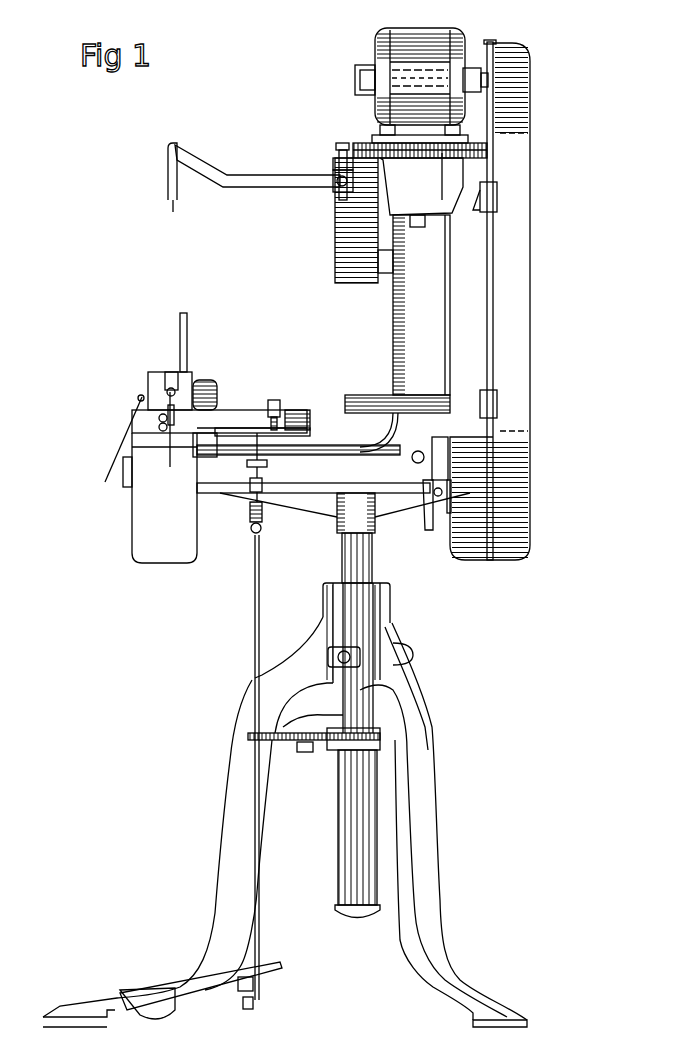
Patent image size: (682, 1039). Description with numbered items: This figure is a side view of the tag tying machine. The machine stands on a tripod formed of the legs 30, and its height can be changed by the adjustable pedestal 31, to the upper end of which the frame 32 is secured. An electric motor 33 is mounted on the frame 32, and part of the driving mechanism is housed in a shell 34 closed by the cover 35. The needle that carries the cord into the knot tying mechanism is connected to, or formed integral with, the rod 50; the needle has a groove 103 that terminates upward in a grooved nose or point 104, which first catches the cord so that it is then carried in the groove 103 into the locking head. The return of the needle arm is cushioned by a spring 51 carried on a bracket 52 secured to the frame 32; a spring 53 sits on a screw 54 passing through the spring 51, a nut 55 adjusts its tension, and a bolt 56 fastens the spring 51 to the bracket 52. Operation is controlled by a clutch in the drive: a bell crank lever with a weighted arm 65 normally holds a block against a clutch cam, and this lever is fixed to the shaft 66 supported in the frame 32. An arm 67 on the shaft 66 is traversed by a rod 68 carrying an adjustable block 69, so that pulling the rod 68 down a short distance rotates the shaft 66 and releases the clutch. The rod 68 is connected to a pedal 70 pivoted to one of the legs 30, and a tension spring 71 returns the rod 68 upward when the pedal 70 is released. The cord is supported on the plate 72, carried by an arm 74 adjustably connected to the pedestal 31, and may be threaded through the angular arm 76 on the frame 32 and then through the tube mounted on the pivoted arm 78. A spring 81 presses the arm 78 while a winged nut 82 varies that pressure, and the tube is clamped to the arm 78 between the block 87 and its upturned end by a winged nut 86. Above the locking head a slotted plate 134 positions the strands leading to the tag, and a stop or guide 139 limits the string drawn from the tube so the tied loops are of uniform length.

The legs 30 is at (235, 810).
The adjustable pedestal 31 is at (362, 572).
The frame 32 is at (405, 352).
The electric motor 33 is at (398, 58).
The shell 34 is at (458, 310).
The cover 35 is at (522, 315).
The rod 50 is at (256, 177).
The spring 51 is at (330, 185).
The bracket 52 is at (352, 240).
The spring 53 is at (337, 162).
The screw 54 is at (345, 147).
The nut 55 is at (338, 148).
The bolt 56 is at (335, 195).
The weighted arm 65 is at (428, 525).
The shaft 66 is at (357, 486).
The arm 67 is at (262, 484).
The rod 68 is at (254, 612).
The adjustable block 69 is at (248, 464).
The pedal 70 is at (265, 980).
The spring 71 is at (250, 512).
The plate 72 is at (290, 742).
The arm 74 is at (340, 752).
The angular arm 76 is at (298, 411).
The arm 78 is at (233, 430).
The spring 81 is at (310, 418).
The winged nut 82 is at (278, 402).
The winged nut 86 is at (163, 428).
The block 87 is at (170, 440).
The groove 103 is at (168, 183).
The grooved nose or point 104 is at (173, 207).
The slotted plate 134 is at (158, 376).
The stop plate or pin or guide 139 is at (190, 348).